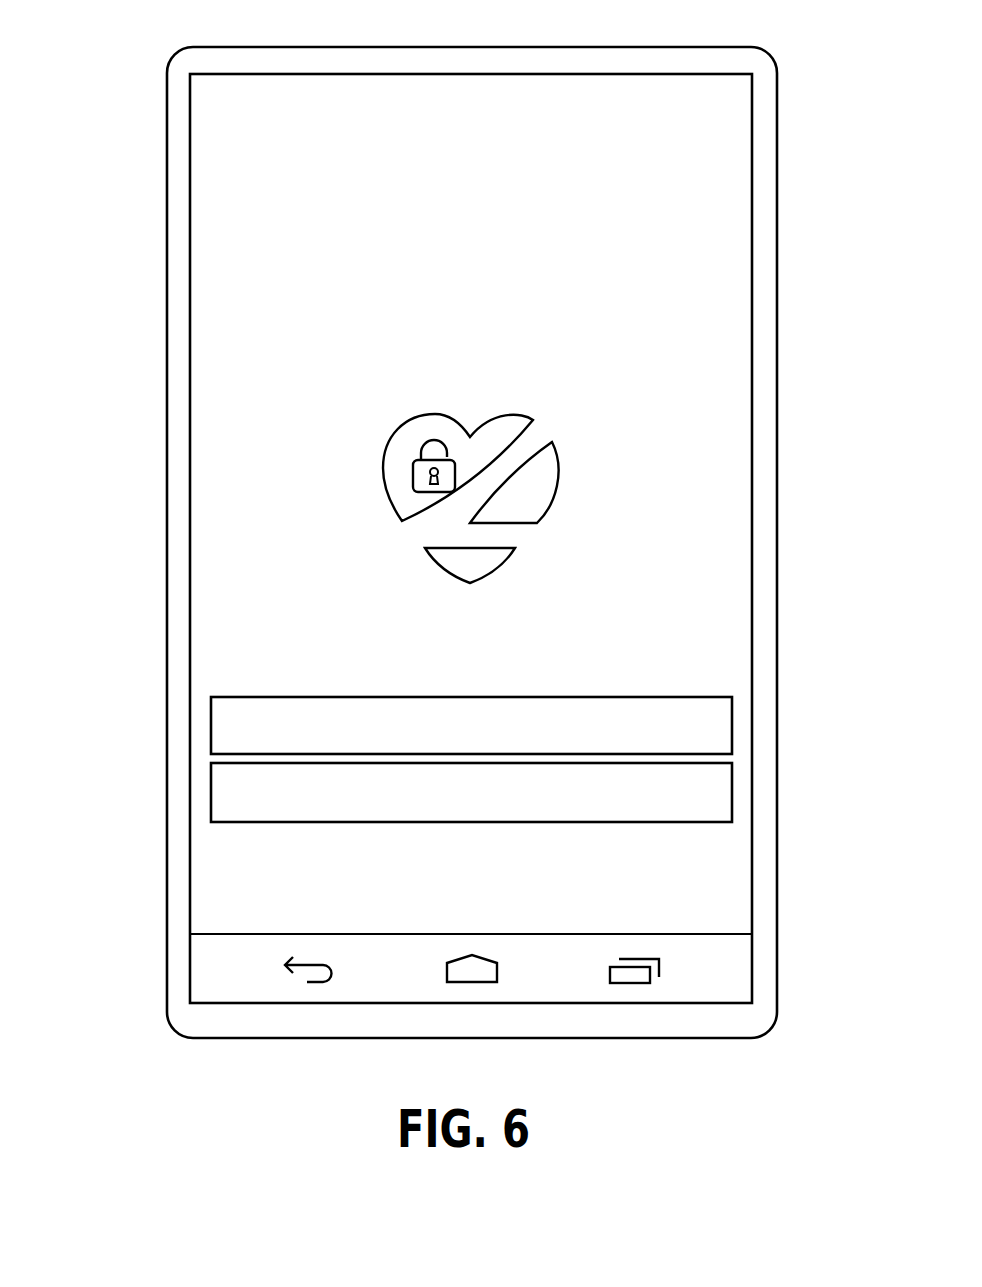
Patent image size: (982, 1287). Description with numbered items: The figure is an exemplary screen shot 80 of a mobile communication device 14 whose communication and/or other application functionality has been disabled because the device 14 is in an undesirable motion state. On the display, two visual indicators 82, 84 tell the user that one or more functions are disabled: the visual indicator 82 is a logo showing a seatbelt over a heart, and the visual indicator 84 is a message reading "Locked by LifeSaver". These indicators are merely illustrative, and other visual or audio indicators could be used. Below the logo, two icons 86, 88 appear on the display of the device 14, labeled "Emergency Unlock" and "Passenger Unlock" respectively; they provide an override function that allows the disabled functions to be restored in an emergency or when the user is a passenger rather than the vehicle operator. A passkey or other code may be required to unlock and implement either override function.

The mobile communication device 14 is at (173, 1081).
The screen shot 80 is at (702, 492).
The visual indicator 82 is at (547, 517).
The visual indicator 84 is at (643, 877).
The icon 86 is at (733, 718).
The icon 88 is at (733, 787).